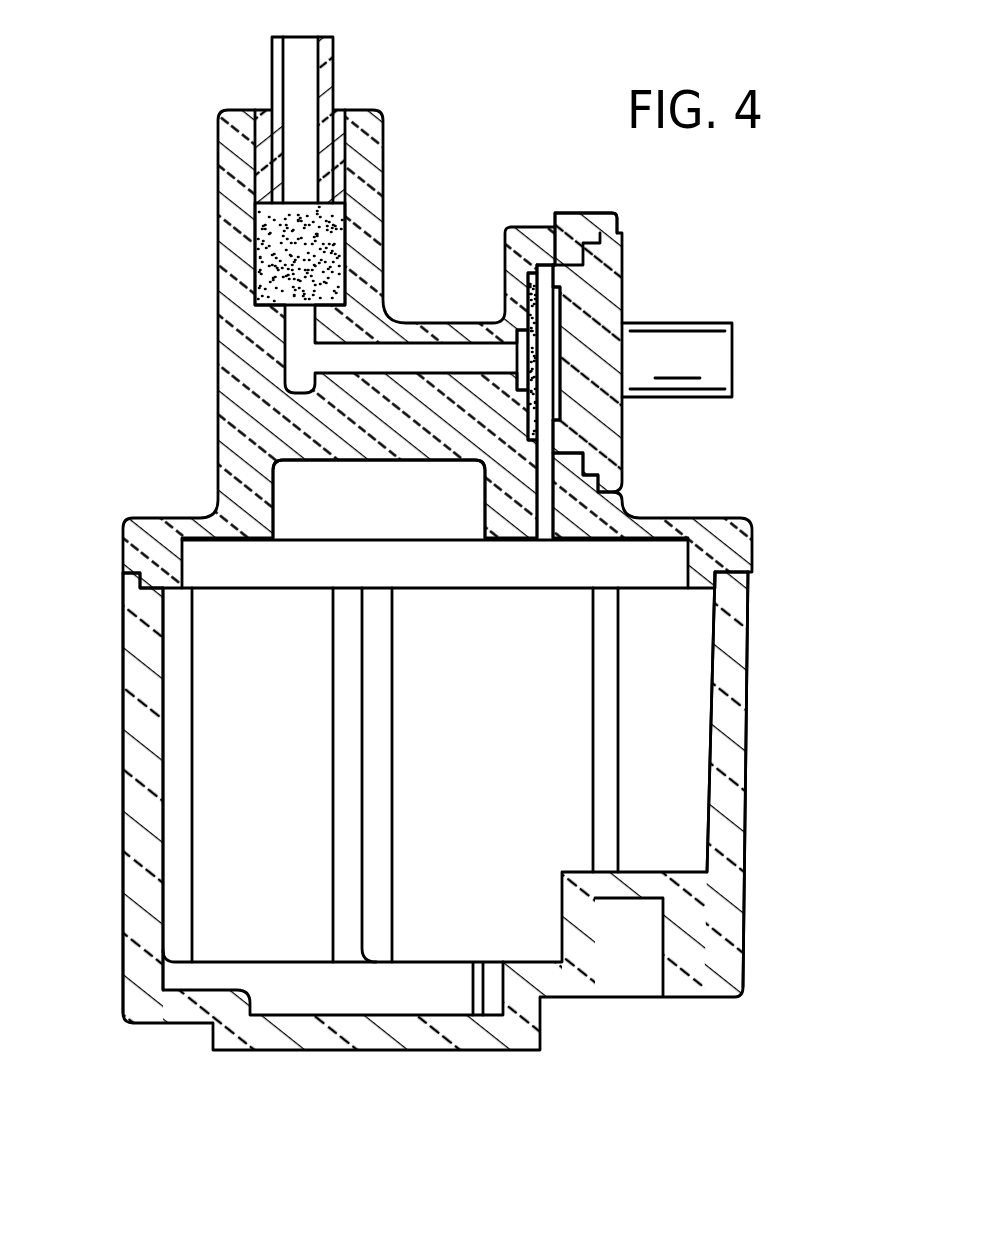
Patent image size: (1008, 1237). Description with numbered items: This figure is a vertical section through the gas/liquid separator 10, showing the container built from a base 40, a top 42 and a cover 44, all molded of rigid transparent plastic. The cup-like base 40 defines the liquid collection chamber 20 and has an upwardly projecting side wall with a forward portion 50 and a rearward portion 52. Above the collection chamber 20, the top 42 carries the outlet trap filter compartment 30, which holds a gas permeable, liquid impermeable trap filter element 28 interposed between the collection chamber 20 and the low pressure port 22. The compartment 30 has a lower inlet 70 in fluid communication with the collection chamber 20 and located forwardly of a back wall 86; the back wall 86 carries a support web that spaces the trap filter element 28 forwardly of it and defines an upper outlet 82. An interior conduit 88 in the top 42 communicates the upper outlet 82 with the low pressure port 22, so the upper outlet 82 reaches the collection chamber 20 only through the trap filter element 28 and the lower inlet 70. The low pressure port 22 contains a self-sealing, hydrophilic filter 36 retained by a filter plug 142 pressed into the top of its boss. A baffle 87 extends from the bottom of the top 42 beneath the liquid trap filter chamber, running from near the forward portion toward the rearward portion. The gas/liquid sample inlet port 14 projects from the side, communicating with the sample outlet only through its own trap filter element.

The gas/liquid separator 10 is at (906, 944).
The gas/liquid sample inlet port 14 is at (688, 319).
The liquid collection chamber 20 is at (500, 808).
The low pressure port 22 is at (299, 63).
The trap filter element 28 is at (517, 293).
The outlet trap filter compartment 30 is at (543, 267).
The self-sealing hydrophilic filter 36 is at (250, 230).
The base 40 is at (743, 820).
The top 42 is at (217, 312).
The cover 44 is at (622, 252).
The forward portion 50 is at (738, 707).
The rearward portion 52 is at (123, 724).
The lower inlet 70 is at (547, 511).
The upper outlet 82 is at (520, 378).
The back wall 86 is at (505, 288).
The baffle 87 is at (478, 573).
The interior conduit 88 is at (356, 372).
The filter plug 142 is at (332, 76).